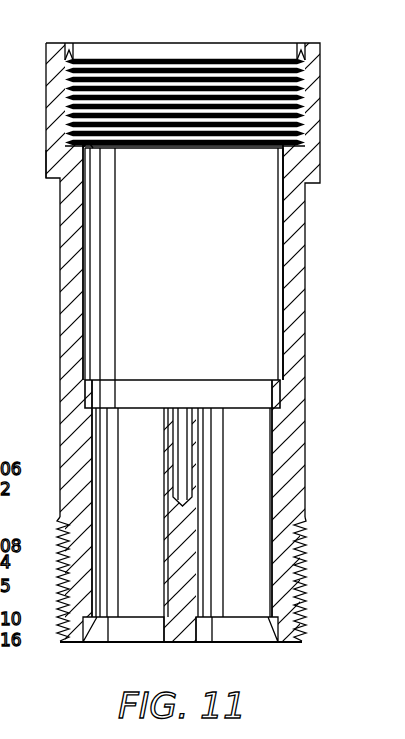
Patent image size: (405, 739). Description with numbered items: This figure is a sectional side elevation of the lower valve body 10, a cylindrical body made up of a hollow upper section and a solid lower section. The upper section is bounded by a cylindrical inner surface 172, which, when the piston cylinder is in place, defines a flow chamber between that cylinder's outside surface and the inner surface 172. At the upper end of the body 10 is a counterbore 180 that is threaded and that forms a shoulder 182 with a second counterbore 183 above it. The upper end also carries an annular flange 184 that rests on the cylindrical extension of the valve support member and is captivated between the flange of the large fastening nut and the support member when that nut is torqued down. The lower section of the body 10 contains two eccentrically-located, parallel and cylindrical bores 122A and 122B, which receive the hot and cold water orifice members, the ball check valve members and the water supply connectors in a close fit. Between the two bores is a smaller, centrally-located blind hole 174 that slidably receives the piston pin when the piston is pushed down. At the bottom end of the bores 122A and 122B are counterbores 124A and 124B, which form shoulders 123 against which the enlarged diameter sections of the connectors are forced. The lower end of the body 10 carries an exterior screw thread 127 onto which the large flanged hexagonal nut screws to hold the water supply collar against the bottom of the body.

The lower valve body 10 is at (55, 233).
The cylindrical inner surface 172 is at (93, 296).
The blind hole 174 is at (186, 418).
The counterbore 180 is at (93, 149).
The shoulder 182 is at (296, 50).
The second counterbore 183 is at (73, 43).
The annular flange 184 is at (46, 160).
The bore 122A is at (97, 522).
The bore 122B is at (274, 512).
The shoulder 123 is at (107, 632).
The counterbore 124A is at (172, 640).
The counterbore 124B is at (226, 638).
The exterior screw thread 127 is at (62, 629).